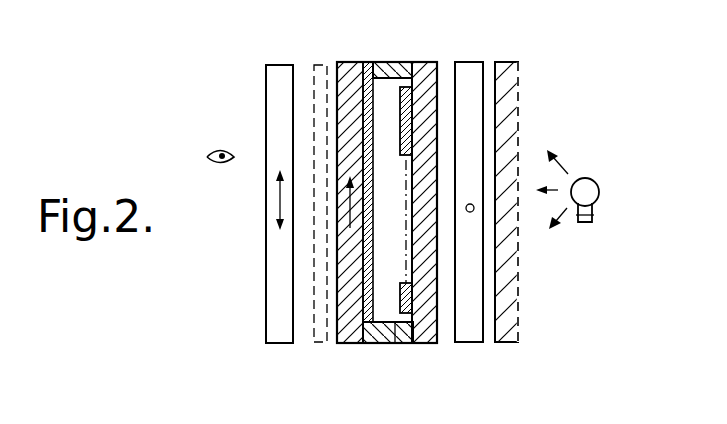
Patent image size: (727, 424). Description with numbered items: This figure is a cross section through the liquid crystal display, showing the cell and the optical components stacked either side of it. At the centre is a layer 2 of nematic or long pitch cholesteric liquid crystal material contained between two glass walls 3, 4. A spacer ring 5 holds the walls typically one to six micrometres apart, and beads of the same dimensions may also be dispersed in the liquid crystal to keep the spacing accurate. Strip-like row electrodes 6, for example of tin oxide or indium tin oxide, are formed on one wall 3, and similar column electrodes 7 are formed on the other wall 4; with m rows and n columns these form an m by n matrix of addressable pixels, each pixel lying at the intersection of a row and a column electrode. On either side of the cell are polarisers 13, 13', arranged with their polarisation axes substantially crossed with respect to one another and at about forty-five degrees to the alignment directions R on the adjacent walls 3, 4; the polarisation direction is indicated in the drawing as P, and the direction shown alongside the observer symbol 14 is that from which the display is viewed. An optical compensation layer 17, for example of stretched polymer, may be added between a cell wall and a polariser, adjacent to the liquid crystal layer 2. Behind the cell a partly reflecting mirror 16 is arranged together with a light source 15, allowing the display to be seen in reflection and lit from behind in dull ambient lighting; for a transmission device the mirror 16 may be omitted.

The layer of liquid crystal material 2 is at (388, 343).
The glass wall 3 is at (350, 62).
The glass wall 4 is at (427, 343).
The spacer ring 5 is at (397, 62).
The row electrodes 6 is at (422, 62).
The column electrodes 7 is at (373, 62).
The polariser 13 is at (275, 174).
The polariser 13' is at (469, 173).
The observer eye 14 is at (218, 155).
The light source 15 is at (594, 174).
The partly reflecting mirror 16 is at (515, 343).
The optical compensation layer 17 is at (322, 343).
The polarization direction P is at (275, 198).
The alignment directions R is at (352, 202).